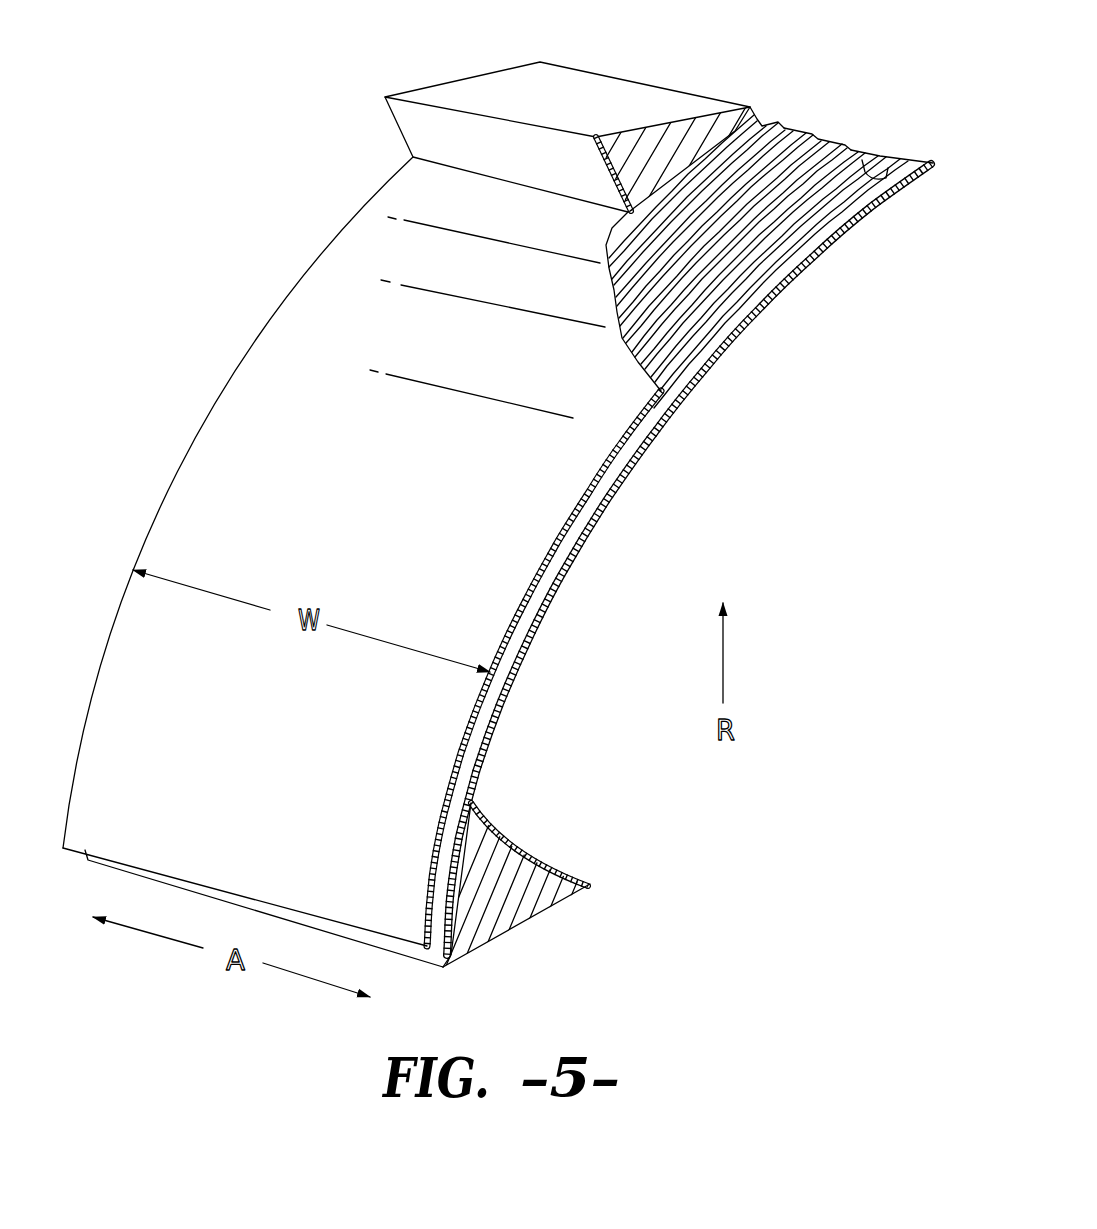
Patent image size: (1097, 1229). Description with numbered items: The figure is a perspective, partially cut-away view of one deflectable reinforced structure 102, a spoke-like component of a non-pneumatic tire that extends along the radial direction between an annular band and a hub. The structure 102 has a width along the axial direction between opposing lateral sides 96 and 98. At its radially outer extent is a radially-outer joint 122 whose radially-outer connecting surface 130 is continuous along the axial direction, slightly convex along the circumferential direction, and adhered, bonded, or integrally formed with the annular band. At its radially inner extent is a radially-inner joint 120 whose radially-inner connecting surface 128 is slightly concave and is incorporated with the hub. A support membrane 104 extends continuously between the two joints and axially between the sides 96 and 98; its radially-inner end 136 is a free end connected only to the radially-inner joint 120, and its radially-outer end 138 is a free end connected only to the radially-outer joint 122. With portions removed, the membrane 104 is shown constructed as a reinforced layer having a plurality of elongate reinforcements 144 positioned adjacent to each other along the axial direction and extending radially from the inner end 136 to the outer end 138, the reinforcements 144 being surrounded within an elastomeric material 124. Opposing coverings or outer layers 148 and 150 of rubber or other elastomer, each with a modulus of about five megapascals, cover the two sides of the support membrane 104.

The reinforced structure 102 is at (217, 137).
The radially-outer connecting surface 130 is at (520, 92).
The radially-outer joint 122 is at (687, 137).
The radially-outer end 138 is at (768, 107).
The elongate reinforcements 144 is at (797, 132).
The elastomeric material 124 is at (885, 168).
The outer layer 150 is at (327, 287).
The lateral side 96 is at (203, 338).
The lateral side 98 is at (703, 453).
The outer layer 148 is at (785, 280).
The support membrane 104 is at (530, 631).
The radially-inner joint 120 is at (530, 897).
The radially-inner connecting surface 128 is at (500, 946).
The radially-inner end 136 is at (65, 862).